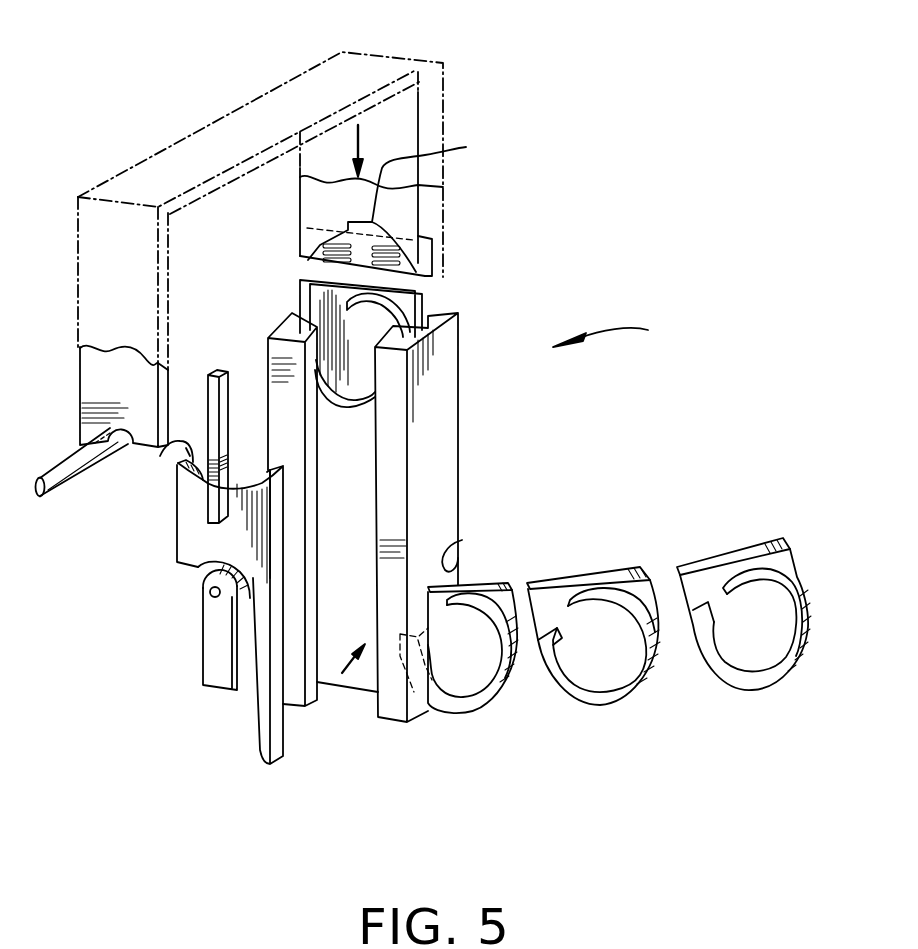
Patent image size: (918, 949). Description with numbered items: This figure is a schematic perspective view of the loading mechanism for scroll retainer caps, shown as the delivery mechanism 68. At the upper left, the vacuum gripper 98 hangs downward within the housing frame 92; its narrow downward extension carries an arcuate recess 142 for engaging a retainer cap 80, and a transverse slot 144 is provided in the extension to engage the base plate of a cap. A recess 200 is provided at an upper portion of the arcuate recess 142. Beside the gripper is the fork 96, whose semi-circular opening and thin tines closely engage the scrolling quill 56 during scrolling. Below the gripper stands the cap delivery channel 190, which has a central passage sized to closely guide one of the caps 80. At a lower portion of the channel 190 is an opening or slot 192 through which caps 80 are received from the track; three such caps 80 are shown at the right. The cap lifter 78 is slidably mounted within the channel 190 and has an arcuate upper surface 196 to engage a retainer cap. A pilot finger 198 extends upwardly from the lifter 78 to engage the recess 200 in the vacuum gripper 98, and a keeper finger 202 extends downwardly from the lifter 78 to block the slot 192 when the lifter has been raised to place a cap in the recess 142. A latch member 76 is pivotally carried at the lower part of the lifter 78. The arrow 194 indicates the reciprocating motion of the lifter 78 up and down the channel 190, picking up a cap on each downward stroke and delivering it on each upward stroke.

The housing frame 92 is at (253, 128).
The vacuum gripper 98 is at (437, 217).
The recess 200 is at (441, 177).
The arcuate recess 142 is at (302, 257).
The transverse slot 144 is at (430, 257).
The fork 96 is at (107, 387).
The scrolling quill 56 is at (65, 468).
The arcuate upper surface 196 is at (160, 456).
The pilot finger 198 is at (213, 397).
The cap lifter 78 is at (190, 543).
The latch 76 is at (213, 633).
The keeper finger 202 is at (262, 692).
The cap delivery channel 190 is at (442, 407).
The slot 192 is at (462, 540).
The direction arrow 194 is at (342, 673).
The delivery mechanism 68 is at (690, 349).
The retainer cap 80 is at (575, 581).